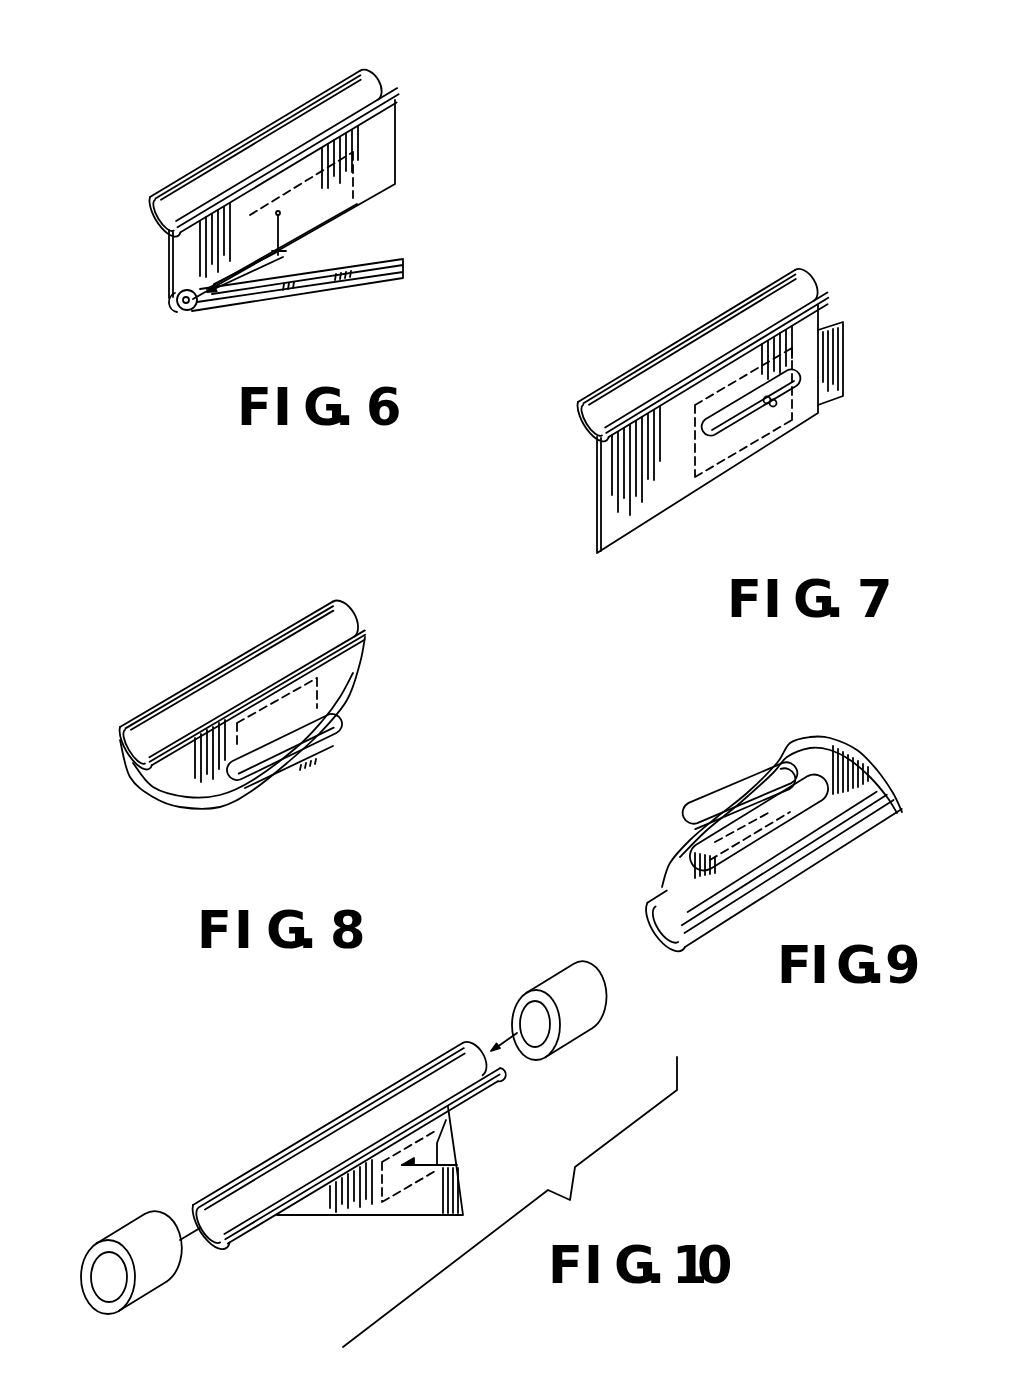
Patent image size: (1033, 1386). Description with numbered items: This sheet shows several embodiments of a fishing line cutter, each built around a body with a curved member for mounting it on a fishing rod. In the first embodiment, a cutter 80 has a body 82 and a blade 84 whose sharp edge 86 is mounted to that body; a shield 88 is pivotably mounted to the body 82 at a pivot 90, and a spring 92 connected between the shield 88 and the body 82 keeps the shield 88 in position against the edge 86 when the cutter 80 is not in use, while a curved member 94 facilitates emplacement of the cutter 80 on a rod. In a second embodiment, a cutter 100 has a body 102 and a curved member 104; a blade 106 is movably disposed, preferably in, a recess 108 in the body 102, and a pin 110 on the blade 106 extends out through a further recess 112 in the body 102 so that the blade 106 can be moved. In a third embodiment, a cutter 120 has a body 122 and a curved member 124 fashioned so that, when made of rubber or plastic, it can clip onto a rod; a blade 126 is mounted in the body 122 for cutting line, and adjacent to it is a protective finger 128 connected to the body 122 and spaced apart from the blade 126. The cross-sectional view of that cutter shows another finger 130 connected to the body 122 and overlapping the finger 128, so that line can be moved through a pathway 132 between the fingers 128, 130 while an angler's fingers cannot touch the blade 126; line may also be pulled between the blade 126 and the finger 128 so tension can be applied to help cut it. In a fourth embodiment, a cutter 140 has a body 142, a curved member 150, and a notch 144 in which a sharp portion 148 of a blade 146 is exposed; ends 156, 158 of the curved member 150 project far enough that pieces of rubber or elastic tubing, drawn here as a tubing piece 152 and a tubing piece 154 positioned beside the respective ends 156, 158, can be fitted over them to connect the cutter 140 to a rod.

In FIG. 6, the cutter 80 is at (311, 180).
In FIG. 6, the body 82 is at (182, 243).
In FIG. 6, the blade 84 is at (355, 172).
In FIG. 6, the sharp edge 86 is at (355, 208).
In FIG. 6, the shield 88 is at (364, 278).
In FIG. 6, the pivot 90 is at (188, 303).
In FIG. 6, the spring 92 is at (290, 247).
In FIG. 6, the curved member 94 is at (363, 78).
In FIG. 7, the cutter 100 is at (708, 432).
In FIG. 7, the body 102 is at (613, 460).
In FIG. 7, the curved member 104 is at (615, 379).
In FIG. 7, the blade 106 is at (841, 322).
In FIG. 7, the recess 108 is at (717, 397).
In FIG. 7, the pin 110 is at (777, 414).
In FIG. 7, the recess 112 is at (720, 452).
In FIG. 8, the cutter 120 is at (204, 739).
In FIG. 8, the body 122 is at (193, 777).
In FIG. 8, the curved member 124 is at (120, 737).
In FIG. 8, the blade 126 is at (247, 733).
In FIG. 9, the blade 126 is at (767, 827).
In FIG. 9, the protective finger 128 is at (710, 830).
In FIG. 9, the finger 130 is at (743, 780).
In FIG. 9, the pathway 132 is at (800, 763).
In FIG. 10, the cutter 140 is at (343, 1132).
In FIG. 10, the body 142 is at (353, 1207).
In FIG. 10, the notch 144 is at (458, 1157).
In FIG. 10, the blade 146 is at (407, 1177).
In FIG. 10, the sharp portion 148 is at (453, 1143).
In FIG. 10, the curved member 150 is at (349, 1168).
In FIG. 10, the ring 152 is at (140, 1232).
In FIG. 10, the ring 154 is at (547, 972).
In FIG. 10, the end 156 is at (212, 1243).
In FIG. 10, the end 158 is at (453, 1047).